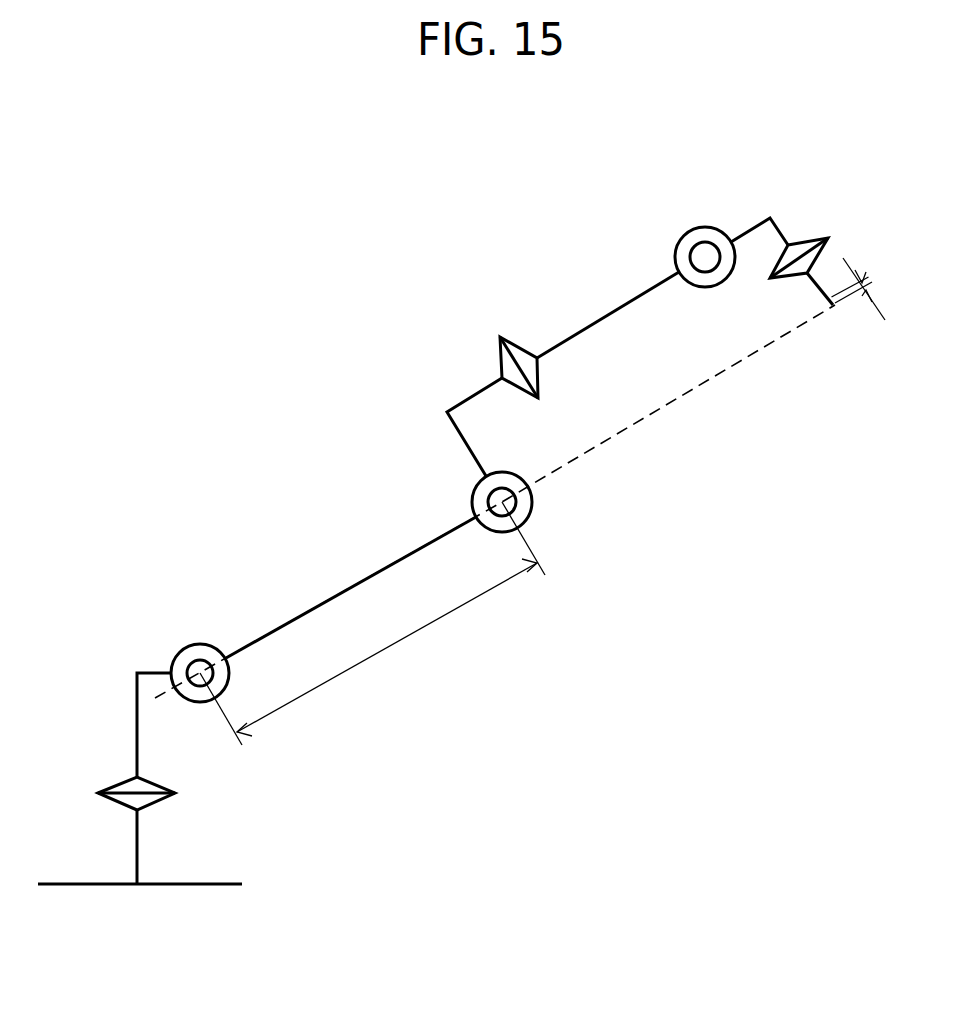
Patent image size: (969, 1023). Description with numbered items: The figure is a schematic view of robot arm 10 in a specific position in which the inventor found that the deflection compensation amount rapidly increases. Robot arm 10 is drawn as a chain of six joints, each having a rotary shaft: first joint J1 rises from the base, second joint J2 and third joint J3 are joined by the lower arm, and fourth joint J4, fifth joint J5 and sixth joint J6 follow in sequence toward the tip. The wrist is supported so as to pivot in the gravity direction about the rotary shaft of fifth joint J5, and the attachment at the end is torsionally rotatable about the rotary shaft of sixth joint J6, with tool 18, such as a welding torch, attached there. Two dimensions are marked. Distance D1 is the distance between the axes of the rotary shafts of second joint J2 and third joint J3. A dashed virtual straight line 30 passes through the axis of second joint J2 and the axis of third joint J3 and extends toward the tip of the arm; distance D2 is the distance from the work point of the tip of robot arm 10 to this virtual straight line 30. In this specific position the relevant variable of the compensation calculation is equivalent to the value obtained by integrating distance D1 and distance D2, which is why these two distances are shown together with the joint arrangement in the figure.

The robot arm 10 is at (288, 407).
The tool 18 is at (825, 298).
The virtual straight line 30 is at (642, 428).
The first joint J1 is at (130, 778).
The second joint J2 is at (213, 647).
The third joint J3 is at (475, 492).
The fourth joint J4 is at (520, 343).
The fifth joint J5 is at (703, 228).
The sixth joint J6 is at (808, 240).
The distance D1 is at (372, 623).
The distance D2 is at (873, 289).